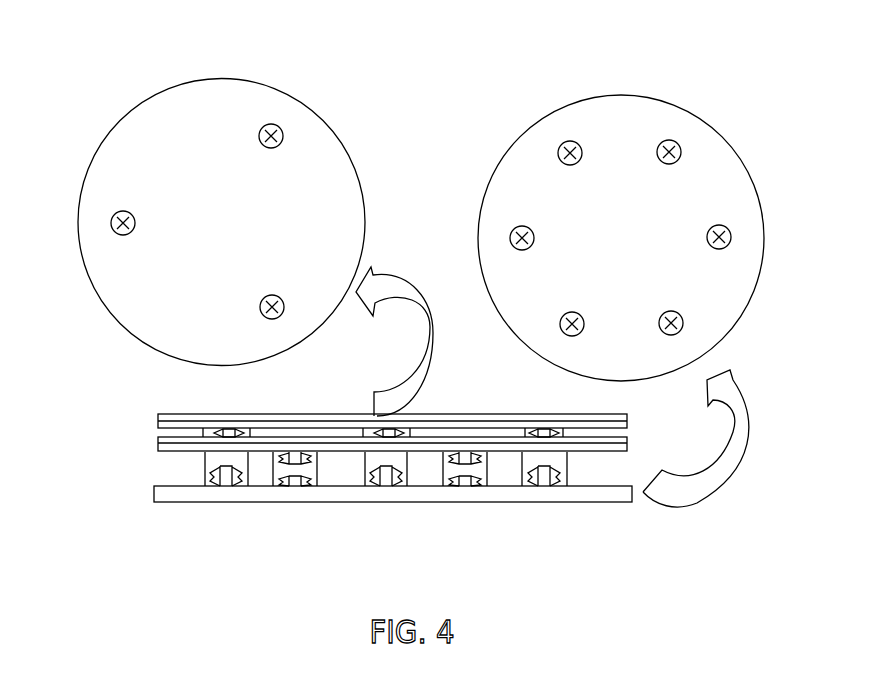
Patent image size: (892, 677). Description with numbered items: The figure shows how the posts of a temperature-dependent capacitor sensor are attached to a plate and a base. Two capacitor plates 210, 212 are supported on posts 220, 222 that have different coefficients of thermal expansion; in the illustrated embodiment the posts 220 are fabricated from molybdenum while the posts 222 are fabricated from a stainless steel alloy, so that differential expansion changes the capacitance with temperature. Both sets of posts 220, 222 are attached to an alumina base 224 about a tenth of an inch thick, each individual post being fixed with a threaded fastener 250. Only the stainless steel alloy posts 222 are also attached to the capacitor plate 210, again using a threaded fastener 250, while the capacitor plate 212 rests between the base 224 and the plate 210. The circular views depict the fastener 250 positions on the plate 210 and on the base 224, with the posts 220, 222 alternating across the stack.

The capacitor plate 210 is at (180, 80).
The capacitor plate 212 is at (143, 445).
The alumina base 224 is at (580, 97).
The posts 220 is at (558, 153).
The posts 222 is at (283, 136).
The threaded fastener 250 is at (271, 124).